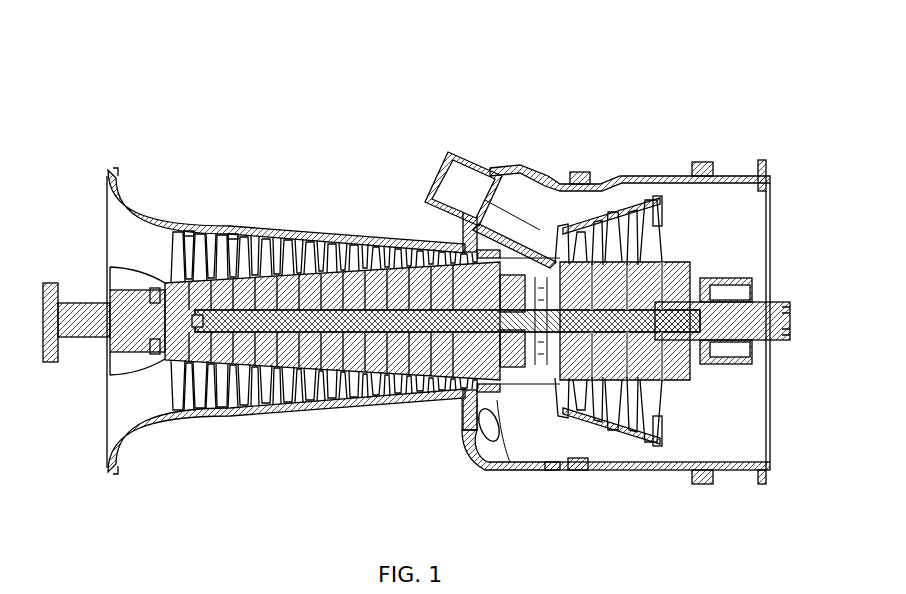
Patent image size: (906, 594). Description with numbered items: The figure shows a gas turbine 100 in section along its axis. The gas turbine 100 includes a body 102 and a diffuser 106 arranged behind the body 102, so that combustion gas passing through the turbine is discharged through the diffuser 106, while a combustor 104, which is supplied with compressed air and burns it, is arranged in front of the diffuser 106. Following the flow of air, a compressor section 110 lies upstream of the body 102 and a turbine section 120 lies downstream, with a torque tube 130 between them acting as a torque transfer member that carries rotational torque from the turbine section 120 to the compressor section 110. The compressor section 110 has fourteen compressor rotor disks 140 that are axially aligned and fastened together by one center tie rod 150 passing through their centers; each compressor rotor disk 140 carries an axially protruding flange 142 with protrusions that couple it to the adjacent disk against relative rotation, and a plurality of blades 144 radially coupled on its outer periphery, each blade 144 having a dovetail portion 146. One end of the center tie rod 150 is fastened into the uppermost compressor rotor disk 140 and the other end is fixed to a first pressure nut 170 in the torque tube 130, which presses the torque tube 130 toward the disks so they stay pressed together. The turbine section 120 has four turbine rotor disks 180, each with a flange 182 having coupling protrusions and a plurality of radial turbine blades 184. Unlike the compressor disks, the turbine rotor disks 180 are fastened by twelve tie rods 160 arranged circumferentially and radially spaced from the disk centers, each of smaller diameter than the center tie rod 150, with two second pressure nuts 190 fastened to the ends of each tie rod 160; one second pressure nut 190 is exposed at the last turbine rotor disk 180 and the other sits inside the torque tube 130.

The gas turbine 100 is at (733, 28).
The body 102 is at (323, 216).
The combustor 104 is at (455, 150).
The diffuser 106 is at (733, 157).
The compressor section 110 is at (160, 365).
The turbine section 120 is at (561, 400).
The torque tube 130 is at (512, 400).
The compressor rotor disk 140 is at (232, 250).
The flange 142 is at (212, 251).
The blade 144 is at (238, 250).
The dovetail portion 146 is at (258, 250).
The center tie rod 150 is at (187, 313).
The tie rod 160 is at (678, 362).
The first pressure nut 170 is at (401, 240).
The turbine rotor disk 180 is at (645, 258).
The flange 182 is at (640, 178).
The turbine blade 184 is at (657, 192).
The second pressure nut 190 is at (512, 262).